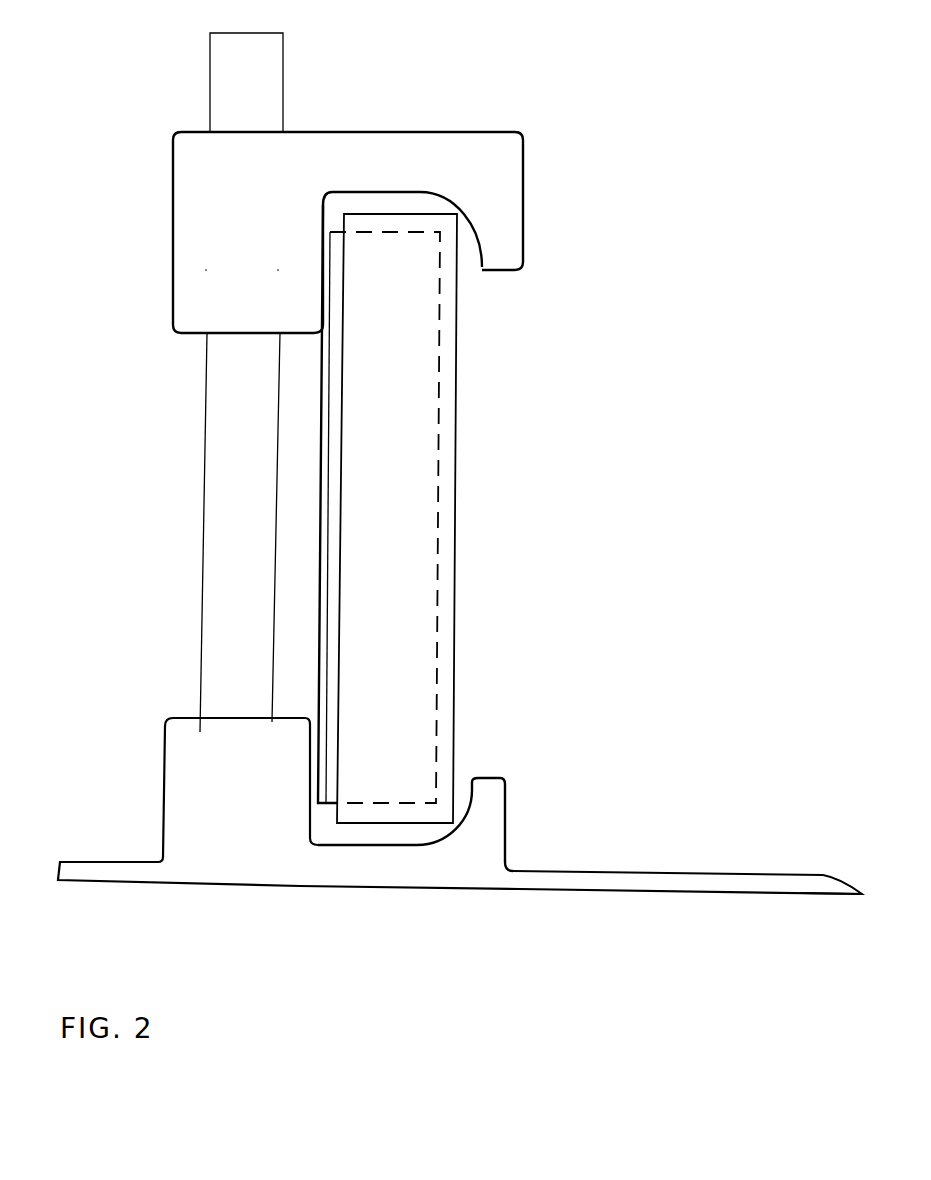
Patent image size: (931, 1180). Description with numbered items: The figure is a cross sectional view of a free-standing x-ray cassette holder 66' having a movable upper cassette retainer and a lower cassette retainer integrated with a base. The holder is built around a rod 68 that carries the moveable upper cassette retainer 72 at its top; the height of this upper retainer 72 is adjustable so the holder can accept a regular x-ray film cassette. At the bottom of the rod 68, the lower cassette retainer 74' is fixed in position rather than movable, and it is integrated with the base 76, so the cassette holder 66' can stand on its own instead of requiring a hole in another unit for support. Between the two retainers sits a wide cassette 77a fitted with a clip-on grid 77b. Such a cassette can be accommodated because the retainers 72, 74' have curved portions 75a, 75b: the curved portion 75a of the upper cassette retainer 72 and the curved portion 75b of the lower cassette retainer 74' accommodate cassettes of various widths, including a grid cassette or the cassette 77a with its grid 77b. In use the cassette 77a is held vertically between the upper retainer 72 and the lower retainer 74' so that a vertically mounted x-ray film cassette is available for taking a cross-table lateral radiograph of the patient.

The moveable upper cassette retainer 72 is at (370, 150).
The rod 68 is at (230, 522).
The cassette holder 66' is at (547, 450).
The curved portion 75a is at (440, 195).
The curved portion 75b is at (443, 827).
The cassette 77a is at (390, 460).
The clip-on grid 77b is at (457, 505).
The lower cassette retainer 74' is at (460, 928).
The base 76 is at (697, 882).